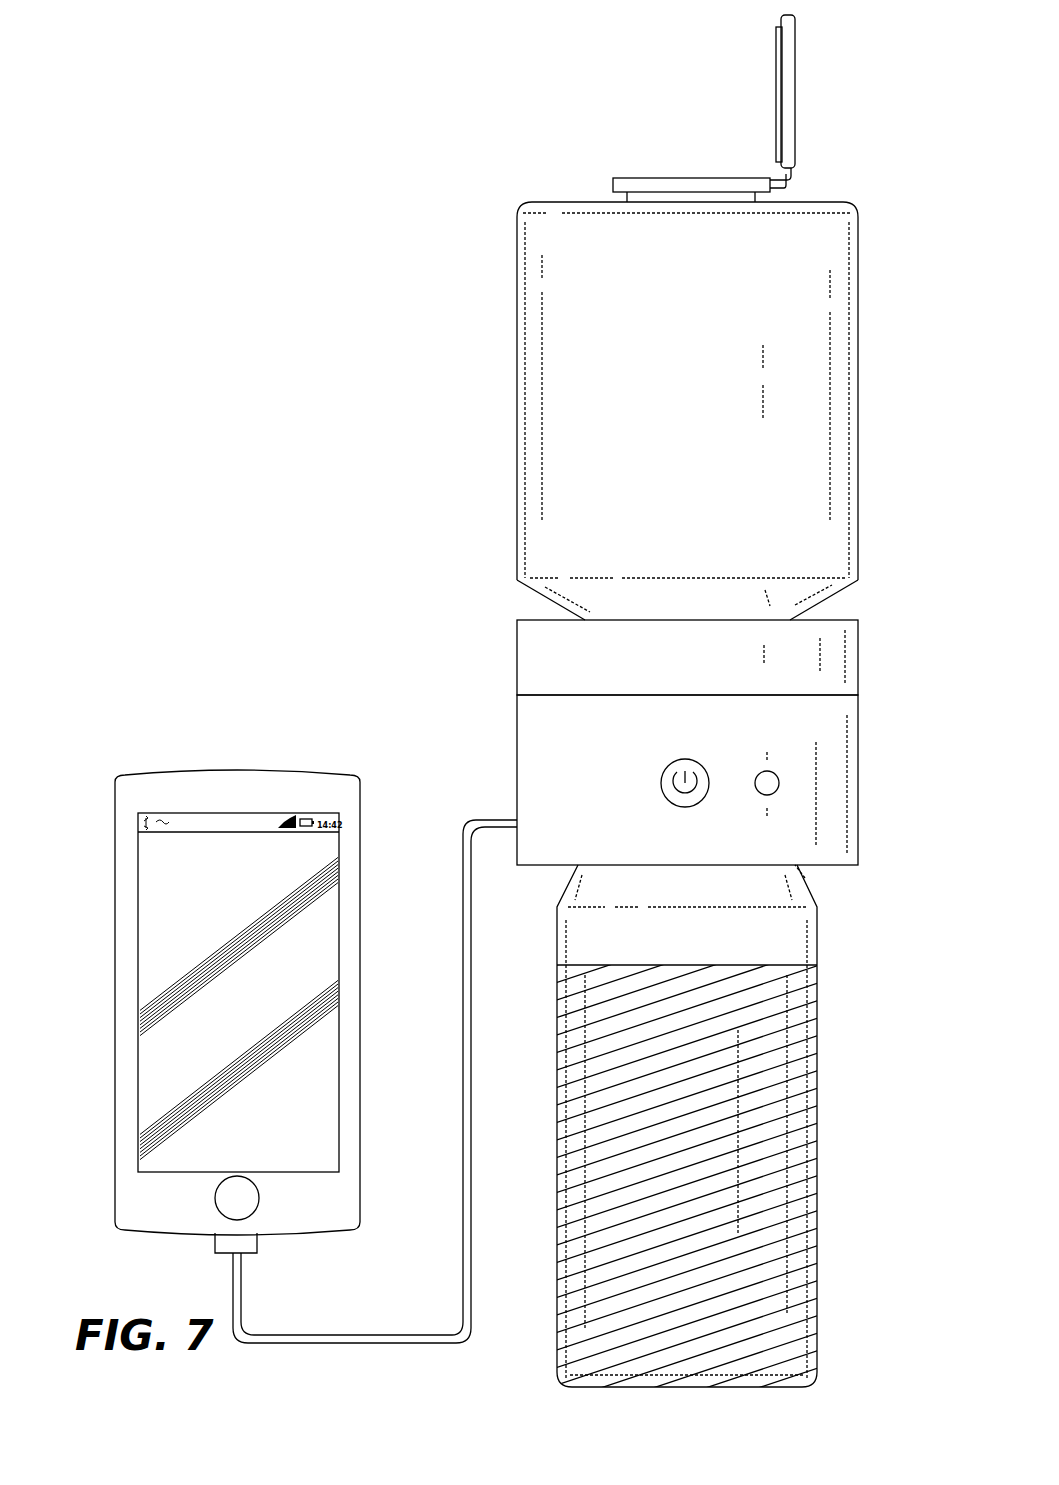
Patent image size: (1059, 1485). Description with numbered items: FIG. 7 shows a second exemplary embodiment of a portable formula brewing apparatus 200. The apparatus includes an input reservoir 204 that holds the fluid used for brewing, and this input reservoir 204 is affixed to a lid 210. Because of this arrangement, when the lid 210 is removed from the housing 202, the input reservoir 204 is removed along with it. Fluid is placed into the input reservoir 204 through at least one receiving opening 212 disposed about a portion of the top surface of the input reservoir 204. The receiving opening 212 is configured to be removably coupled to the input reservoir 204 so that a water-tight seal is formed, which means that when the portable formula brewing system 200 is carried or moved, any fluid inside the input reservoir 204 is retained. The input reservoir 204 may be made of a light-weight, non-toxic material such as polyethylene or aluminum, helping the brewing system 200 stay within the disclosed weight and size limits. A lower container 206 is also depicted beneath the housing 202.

The portable formula brewing apparatus 200 is at (339, 61).
The housing 202 is at (532, 760).
The input reservoir 204 is at (518, 328).
The lower collection container 206 is at (583, 948).
The lid 210 is at (545, 663).
The receiving opening 212 is at (660, 178).